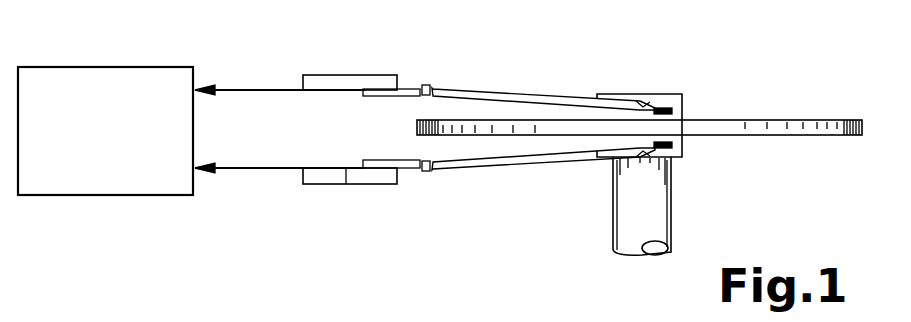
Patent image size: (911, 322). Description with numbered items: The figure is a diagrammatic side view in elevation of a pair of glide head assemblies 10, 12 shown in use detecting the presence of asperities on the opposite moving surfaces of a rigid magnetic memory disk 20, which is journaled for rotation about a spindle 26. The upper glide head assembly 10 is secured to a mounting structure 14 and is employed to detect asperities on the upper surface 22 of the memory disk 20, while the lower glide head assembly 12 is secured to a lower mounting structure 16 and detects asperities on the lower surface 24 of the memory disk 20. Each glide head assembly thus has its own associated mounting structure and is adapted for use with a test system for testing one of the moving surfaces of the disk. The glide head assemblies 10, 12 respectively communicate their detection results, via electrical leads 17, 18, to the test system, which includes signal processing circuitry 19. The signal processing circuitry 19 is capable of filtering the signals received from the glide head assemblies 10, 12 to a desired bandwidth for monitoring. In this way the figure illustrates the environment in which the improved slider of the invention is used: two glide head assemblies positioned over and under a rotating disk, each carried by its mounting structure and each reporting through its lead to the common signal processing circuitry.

The upper glide head assembly 10 is at (524, 80).
The lower glide head assembly 12 is at (556, 190).
The mounting structure 14 is at (337, 82).
The lower mounting structure 16 is at (346, 184).
The electrical lead 17 is at (230, 88).
The electrical lead 18 is at (262, 171).
The signal processing circuitry 19 is at (95, 66).
The rigid magnetic memory disk 20 is at (712, 117).
The upper surface 22 is at (807, 116).
The lower surface 24 is at (767, 130).
The spindle 26 is at (682, 155).